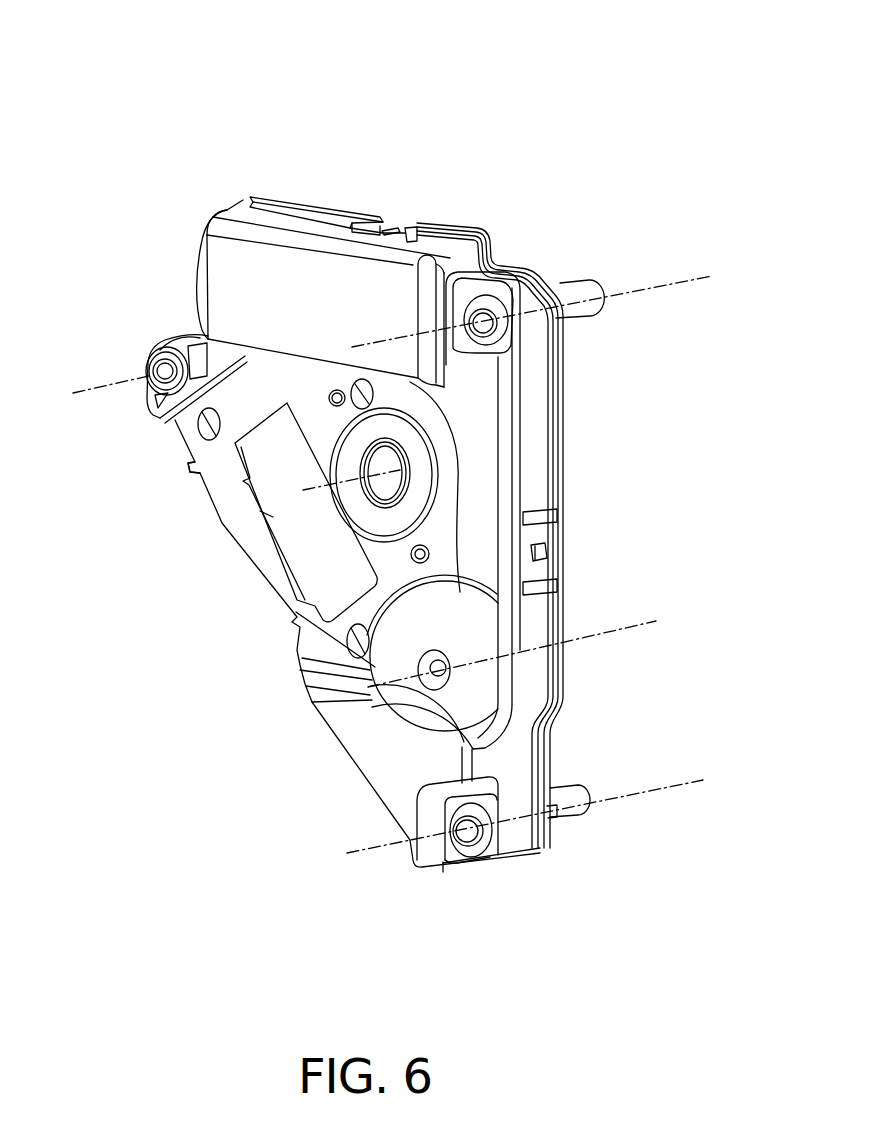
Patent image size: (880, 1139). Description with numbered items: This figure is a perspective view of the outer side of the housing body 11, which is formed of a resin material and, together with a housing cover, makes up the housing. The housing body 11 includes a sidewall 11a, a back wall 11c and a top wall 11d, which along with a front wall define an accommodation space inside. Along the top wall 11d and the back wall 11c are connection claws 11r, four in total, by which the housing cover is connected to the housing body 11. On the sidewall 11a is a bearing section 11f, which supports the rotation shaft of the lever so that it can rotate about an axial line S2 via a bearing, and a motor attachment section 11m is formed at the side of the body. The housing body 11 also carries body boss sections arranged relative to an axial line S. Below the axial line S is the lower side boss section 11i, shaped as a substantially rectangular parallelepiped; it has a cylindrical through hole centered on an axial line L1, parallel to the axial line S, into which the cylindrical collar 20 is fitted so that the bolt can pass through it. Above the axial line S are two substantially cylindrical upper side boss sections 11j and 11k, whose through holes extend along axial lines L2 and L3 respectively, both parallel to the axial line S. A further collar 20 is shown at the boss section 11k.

The housing body 11 is at (400, 138).
The top wall 11d is at (317, 222).
The connection claws 11r is at (393, 230).
The upper side boss section 11k is at (523, 293).
The back wall 11c is at (541, 410).
The cylindrical collar 20 is at (587, 307).
The sidewall 11a is at (468, 444).
The bearing section 11f is at (370, 499).
The axial line S2 is at (315, 487).
The upper side boss section 11j is at (175, 342).
The motor attachment section 11m is at (217, 447).
The lower side boss section 11i is at (513, 833).
The axial line L3 is at (657, 276).
The axial line L2 is at (108, 383).
The axial line L1 is at (655, 792).
The axial line S is at (618, 632).